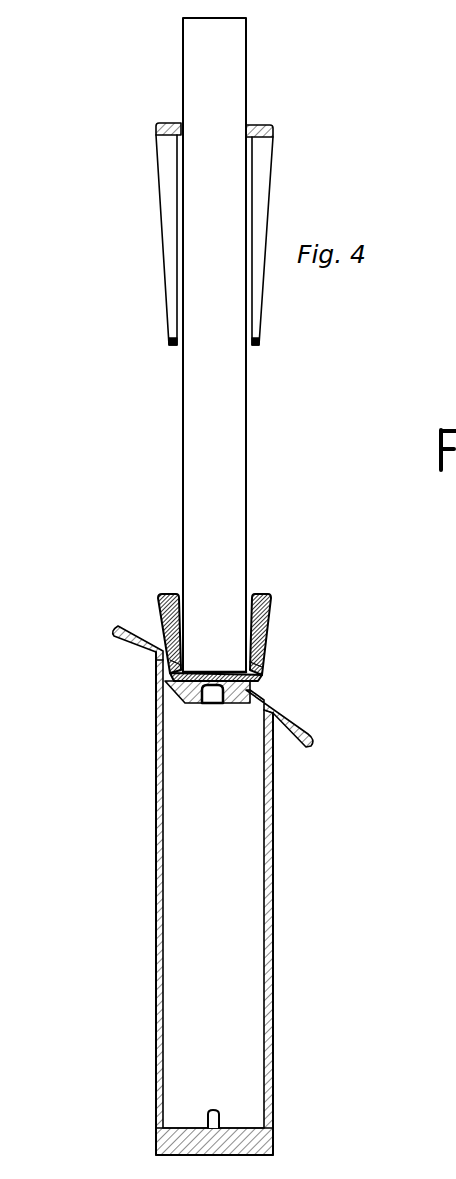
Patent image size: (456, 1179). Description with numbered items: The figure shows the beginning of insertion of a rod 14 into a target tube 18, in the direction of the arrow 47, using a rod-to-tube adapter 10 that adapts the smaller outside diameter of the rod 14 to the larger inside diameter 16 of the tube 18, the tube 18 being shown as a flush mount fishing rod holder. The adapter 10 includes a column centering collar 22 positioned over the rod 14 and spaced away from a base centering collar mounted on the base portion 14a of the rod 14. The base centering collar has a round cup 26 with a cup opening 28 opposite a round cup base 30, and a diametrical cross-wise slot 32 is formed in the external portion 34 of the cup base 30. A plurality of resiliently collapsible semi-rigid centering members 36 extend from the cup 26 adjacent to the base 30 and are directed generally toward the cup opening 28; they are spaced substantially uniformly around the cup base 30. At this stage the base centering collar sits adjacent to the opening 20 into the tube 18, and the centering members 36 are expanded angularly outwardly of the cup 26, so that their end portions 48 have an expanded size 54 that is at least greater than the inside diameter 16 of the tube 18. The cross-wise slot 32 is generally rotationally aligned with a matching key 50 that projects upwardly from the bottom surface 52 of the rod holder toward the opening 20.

The rod-to-tube adapter 10 is at (328, 386).
The rod 14 is at (183, 63).
The base portion of rod 14a is at (185, 703).
The inside diameter of tube 16 is at (127, 876).
The tube 18 is at (157, 975).
The opening into tube 20 is at (262, 693).
The column centering collar 22 is at (162, 123).
The round cup 26 is at (252, 628).
The cup opening 28 is at (243, 605).
The cup base 30 is at (155, 707).
The diametrical cross-wise slot 32 is at (218, 702).
The external portion of cup base 34 is at (190, 700).
The resiliently collapsible semi-rigid centering members 36 is at (160, 608).
The arrow 47 is at (215, 717).
The end portions of centering members 48 is at (162, 593).
The matching key 50 is at (208, 1113).
The bottom surface of tube 52 is at (237, 1128).
The expanded size 54 is at (130, 606).